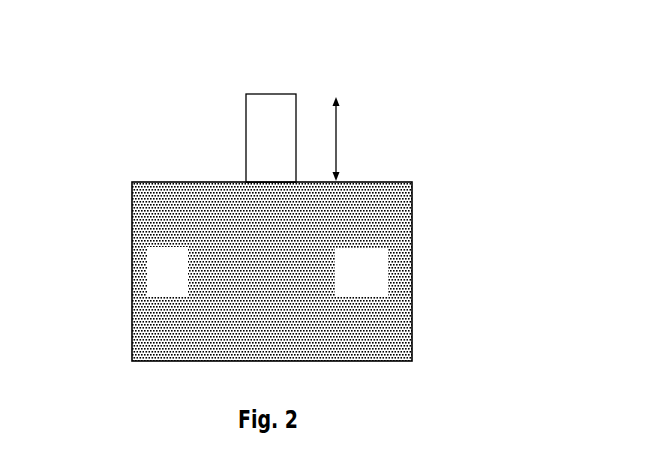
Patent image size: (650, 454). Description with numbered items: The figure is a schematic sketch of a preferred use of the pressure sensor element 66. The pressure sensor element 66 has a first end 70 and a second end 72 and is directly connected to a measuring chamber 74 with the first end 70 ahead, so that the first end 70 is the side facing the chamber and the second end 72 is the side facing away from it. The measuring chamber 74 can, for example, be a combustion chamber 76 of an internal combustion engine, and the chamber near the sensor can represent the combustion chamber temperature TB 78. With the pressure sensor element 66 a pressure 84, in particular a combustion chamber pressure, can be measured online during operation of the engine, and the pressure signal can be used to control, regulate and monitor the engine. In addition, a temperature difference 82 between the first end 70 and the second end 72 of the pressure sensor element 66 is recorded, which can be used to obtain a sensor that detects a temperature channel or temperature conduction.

The pressure sensor element 66 is at (265, 135).
The first end 70 is at (249, 182).
The second end 72 is at (263, 92).
The measuring chamber 74 is at (377, 213).
The combustion chamber 76 is at (366, 332).
The combustion chamber temperature TB 78 is at (383, 273).
The temperature difference 82 is at (425, 132).
The pressure 84 is at (147, 287).